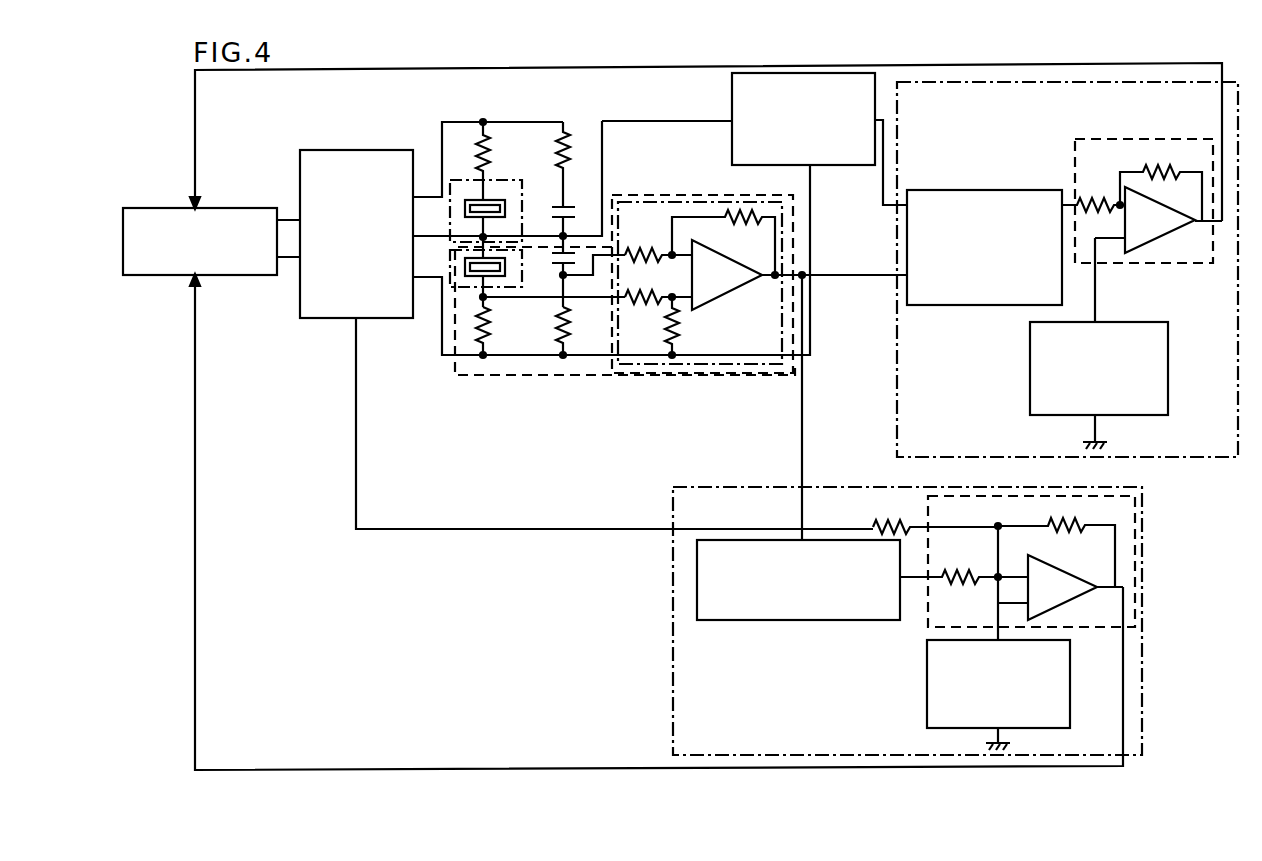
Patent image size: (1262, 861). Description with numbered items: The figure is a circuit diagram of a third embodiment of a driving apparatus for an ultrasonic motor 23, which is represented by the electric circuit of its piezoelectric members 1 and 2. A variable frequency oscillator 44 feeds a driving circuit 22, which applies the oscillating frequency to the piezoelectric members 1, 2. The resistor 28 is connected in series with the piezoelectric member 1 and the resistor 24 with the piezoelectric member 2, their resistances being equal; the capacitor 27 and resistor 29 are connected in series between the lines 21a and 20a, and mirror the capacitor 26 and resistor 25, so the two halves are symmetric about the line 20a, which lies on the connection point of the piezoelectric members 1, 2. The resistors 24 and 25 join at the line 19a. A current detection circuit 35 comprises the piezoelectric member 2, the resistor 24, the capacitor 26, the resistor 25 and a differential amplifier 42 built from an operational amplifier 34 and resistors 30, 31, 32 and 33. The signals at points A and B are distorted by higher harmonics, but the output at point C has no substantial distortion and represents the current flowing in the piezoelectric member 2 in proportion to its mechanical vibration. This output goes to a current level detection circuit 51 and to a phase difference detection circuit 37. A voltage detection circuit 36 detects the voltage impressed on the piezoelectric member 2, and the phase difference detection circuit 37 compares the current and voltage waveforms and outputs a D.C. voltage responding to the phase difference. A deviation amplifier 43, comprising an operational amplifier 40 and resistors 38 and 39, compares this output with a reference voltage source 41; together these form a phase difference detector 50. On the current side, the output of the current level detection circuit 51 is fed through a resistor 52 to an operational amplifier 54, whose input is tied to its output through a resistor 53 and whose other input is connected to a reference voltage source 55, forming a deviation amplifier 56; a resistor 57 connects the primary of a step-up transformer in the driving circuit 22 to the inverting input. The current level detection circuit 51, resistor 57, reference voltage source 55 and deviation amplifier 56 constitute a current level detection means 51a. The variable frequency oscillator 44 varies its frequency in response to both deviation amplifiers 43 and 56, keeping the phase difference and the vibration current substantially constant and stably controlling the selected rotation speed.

The piezoelectric member 1 is at (510, 206).
The piezoelectric member 2 is at (510, 272).
The line 19a is at (522, 375).
The line 20a is at (649, 124).
The line 21a is at (539, 122).
The driving circuit 22 is at (365, 150).
The ultrasonic motor 23 is at (512, 180).
The resistor 24 is at (490, 328).
The resistor 25 is at (570, 328).
The capacitor 26 is at (557, 256).
The capacitor 27 is at (577, 213).
The resistor 28 is at (478, 162).
The resistor 29 is at (572, 160).
The resistor 30 is at (645, 253).
The resistor 31 is at (642, 294).
The resistor 32 is at (738, 219).
The resistor 33 is at (673, 332).
The operational amplifier 34 is at (743, 285).
The current detection circuit 35 is at (690, 376).
The voltage detection circuit 36 is at (732, 100).
The phase difference detection circuit 37 is at (950, 190).
The resistor 38 is at (1096, 203).
The resistor 39 is at (1158, 170).
The operational amplifier 40 is at (1158, 208).
The reference voltage source 41 is at (1030, 374).
The differential amplifier 42 is at (644, 202).
The deviation amplifier 43 is at (1108, 138).
The variable frequency oscillator 44 is at (227, 207).
The phase difference detector 50 is at (930, 458).
The current level detection circuit 51 is at (805, 622).
The current level detection means 51a is at (1143, 565).
The resistor 52 is at (952, 579).
The resistor 53 is at (1059, 518).
The operational amplifier 54 is at (1079, 585).
The reference voltage source 55 is at (1070, 692).
The deviation amplifier 56 is at (1143, 508).
The resistor 57 is at (888, 525).
The point A is at (487, 300).
The point B is at (562, 275).
The point C is at (806, 275).